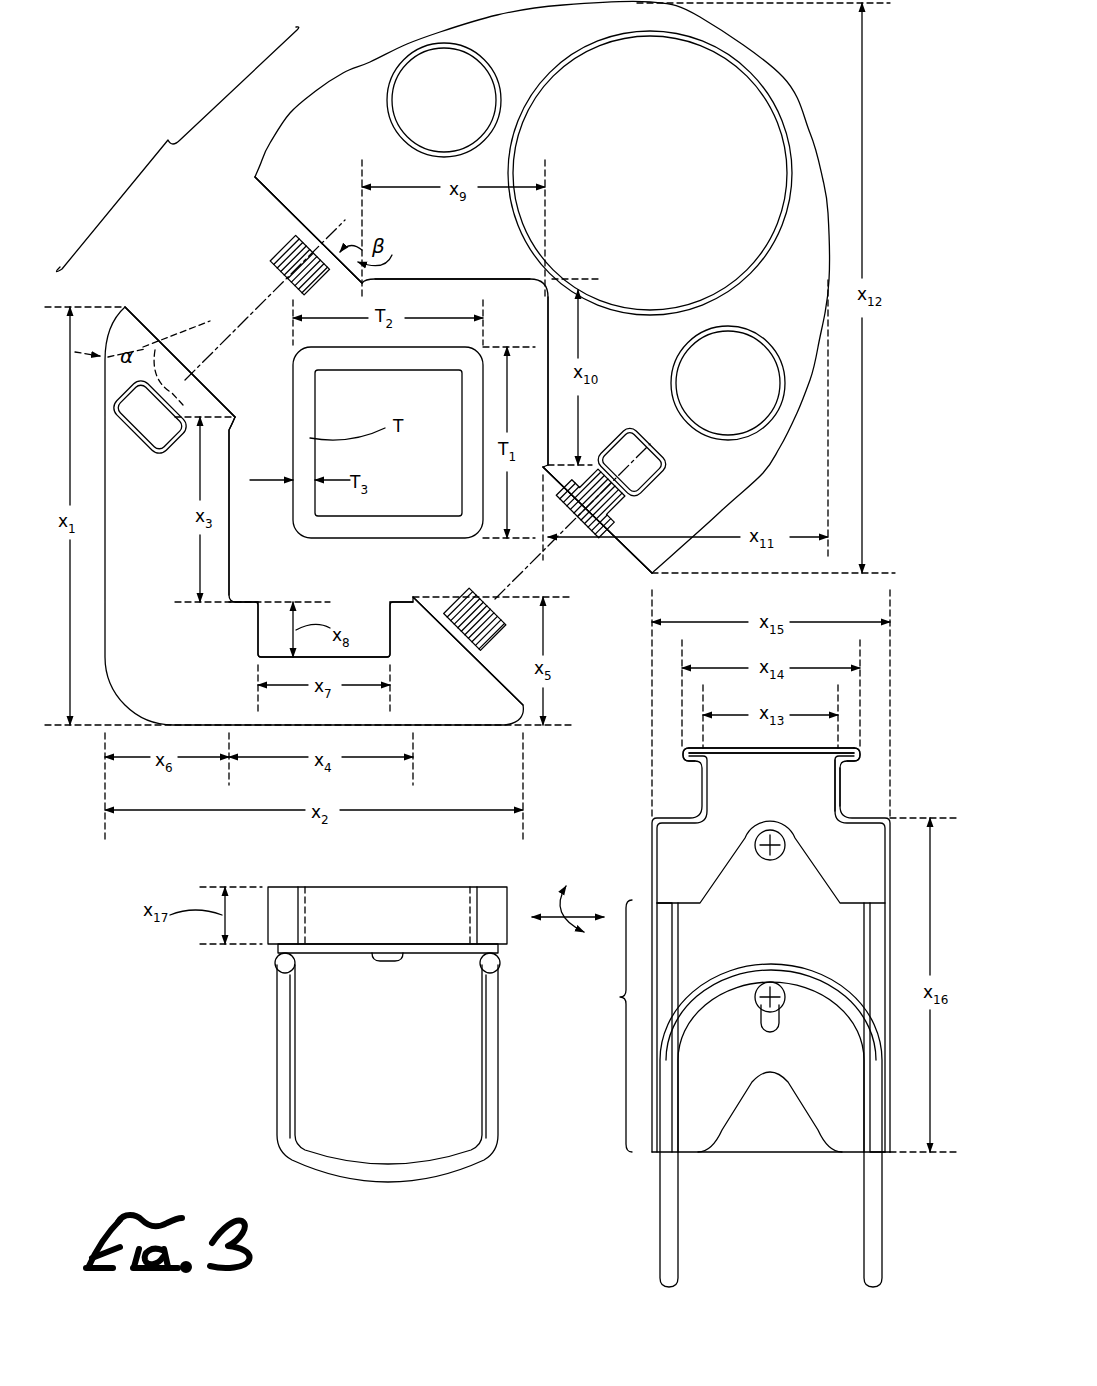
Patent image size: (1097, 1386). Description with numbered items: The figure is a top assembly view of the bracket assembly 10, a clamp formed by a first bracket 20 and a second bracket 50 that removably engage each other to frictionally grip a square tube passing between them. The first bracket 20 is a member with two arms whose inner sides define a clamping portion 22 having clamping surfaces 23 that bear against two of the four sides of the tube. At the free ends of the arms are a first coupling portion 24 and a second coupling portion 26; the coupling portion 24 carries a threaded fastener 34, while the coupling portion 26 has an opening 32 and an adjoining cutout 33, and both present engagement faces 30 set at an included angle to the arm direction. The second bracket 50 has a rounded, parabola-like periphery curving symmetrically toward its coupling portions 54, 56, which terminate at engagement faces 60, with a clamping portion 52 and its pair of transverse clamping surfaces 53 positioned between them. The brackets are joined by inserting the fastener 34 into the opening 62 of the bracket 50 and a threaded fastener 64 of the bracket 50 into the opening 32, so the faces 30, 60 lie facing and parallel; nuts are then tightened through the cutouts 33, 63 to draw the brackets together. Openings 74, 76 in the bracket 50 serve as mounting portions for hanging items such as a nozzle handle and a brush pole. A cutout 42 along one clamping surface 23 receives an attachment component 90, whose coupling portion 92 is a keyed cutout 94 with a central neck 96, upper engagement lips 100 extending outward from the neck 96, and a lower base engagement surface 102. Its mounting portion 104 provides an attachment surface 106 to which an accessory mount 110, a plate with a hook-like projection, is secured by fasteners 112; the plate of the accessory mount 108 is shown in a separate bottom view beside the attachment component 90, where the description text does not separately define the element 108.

The bracket assembly 10 is at (177, 149).
The first bracket 20 is at (90, 783).
The clamping portion 22 is at (253, 443).
The clamping surface 23 is at (230, 513).
The first coupling portion 24 is at (533, 582).
The second coupling portion 26 is at (158, 332).
The engagement face 30 is at (133, 306).
The opening 32 is at (226, 312).
The cutout 33 is at (155, 422).
The threaded fastener 34 is at (478, 588).
The cutout 42 is at (372, 625).
The second bracket 50 is at (895, 110).
The clamping portion 52 is at (450, 295).
The clamping surface 53 is at (548, 322).
The coupling portion 54 is at (263, 240).
The coupling portion 56 is at (637, 583).
The engagement face 60 is at (268, 194).
The opening 62 is at (650, 473).
The cutout 63 is at (623, 452).
The threaded fastener 64 is at (293, 246).
The opening 74 is at (435, 80).
The opening 76 is at (710, 103).
The attachment component 90 is at (905, 640).
The coupling portion 92 is at (913, 748).
The keyed cutout 94 is at (867, 752).
The neck 96 is at (843, 788).
The upper engagement lips 100 is at (673, 750).
The lower base engagement surface 102 is at (490, 907).
The mounting portion 104 is at (734, 1026).
The attachment surface 106 is at (862, 853).
The top plate 108 is at (472, 887).
The accessory mount 110 is at (717, 1082).
The fastener 112 is at (765, 860).